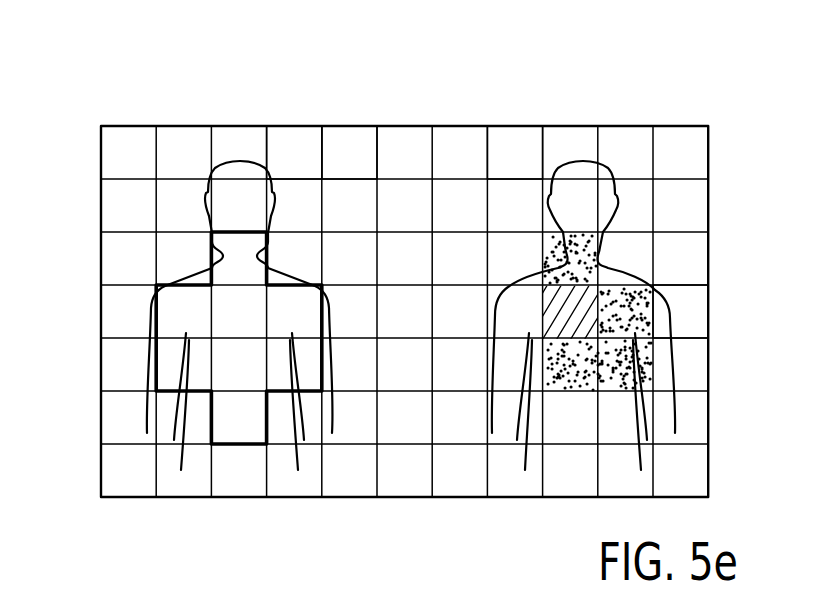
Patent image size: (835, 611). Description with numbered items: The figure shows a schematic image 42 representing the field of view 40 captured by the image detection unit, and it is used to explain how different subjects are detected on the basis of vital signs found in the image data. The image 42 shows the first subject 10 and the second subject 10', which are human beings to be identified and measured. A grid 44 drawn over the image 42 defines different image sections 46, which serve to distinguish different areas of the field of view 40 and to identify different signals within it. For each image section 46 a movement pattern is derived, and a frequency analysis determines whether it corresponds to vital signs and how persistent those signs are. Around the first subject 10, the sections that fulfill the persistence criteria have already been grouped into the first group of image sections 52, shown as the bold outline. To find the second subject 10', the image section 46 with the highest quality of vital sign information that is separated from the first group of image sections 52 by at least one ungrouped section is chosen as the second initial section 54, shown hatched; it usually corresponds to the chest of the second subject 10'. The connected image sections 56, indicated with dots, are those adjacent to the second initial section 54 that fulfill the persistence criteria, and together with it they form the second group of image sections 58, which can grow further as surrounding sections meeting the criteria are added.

The field of view 40 is at (686, 60).
The image 42 is at (304, 126).
The grid 44 is at (378, 141).
The image section 46 is at (508, 147).
The first subject 10 is at (173, 315).
The second subject 10' is at (640, 315).
The first group of image sections 52 is at (155, 351).
The second initial section 54 is at (576, 318).
The connected image sections 56 is at (610, 372).
The second group of image sections 58 is at (728, 306).